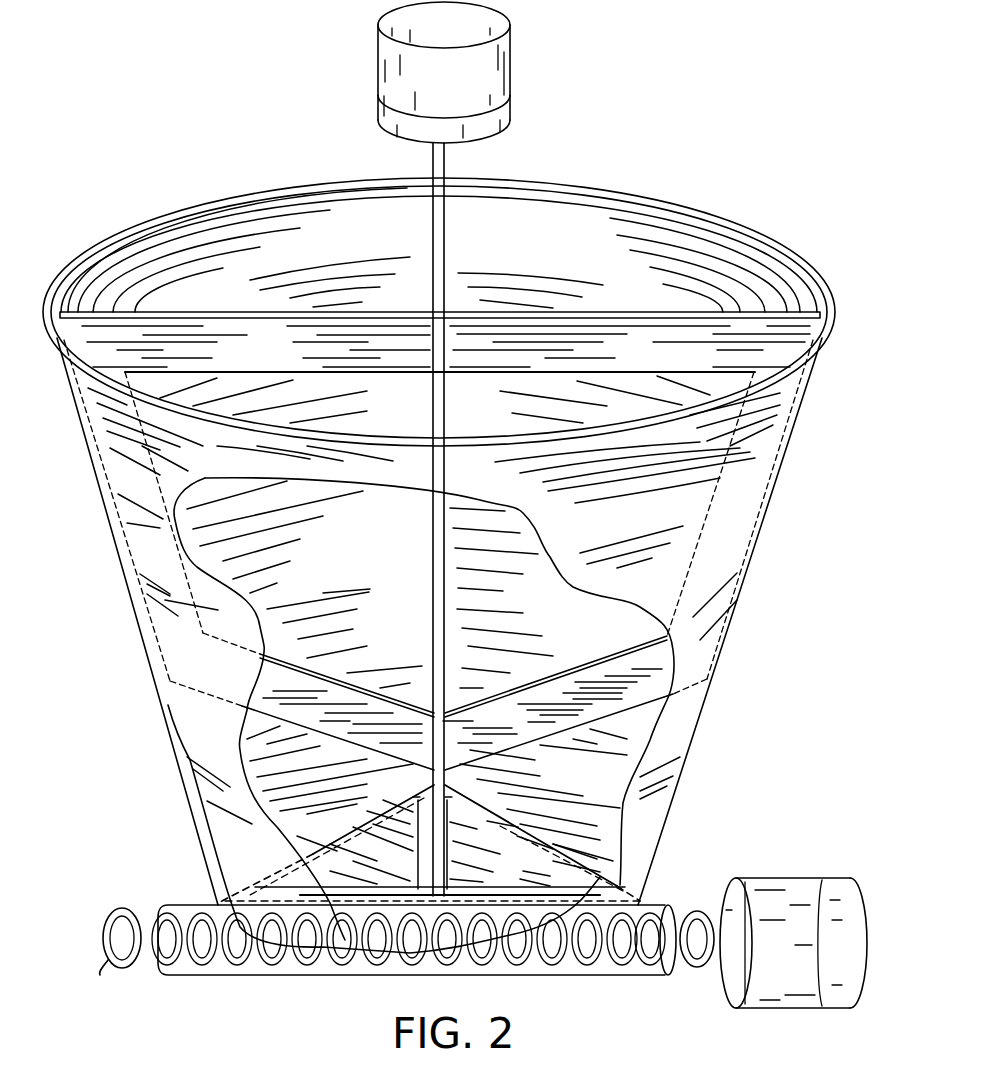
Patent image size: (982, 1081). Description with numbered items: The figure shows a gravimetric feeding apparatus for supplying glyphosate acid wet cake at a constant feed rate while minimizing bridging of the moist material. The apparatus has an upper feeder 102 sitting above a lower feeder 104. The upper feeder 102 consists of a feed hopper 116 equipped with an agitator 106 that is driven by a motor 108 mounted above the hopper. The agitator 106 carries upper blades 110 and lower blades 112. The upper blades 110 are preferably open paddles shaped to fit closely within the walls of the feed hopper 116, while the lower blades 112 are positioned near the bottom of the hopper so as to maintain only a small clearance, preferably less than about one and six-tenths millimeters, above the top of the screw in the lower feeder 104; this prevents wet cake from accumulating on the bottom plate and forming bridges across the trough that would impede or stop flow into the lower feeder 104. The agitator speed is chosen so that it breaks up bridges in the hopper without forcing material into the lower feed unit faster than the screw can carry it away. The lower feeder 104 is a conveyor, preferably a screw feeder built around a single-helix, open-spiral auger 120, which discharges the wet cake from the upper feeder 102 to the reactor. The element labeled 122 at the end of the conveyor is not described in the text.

The upper feeder 102 is at (765, 567).
The lower feeder 104 is at (167, 848).
The agitator 106 is at (442, 280).
The motor 108 is at (515, 70).
The upper blades 110 is at (731, 314).
The lower blades 112 is at (600, 877).
The feed hopper 116 is at (703, 734).
The auger 120 is at (115, 906).
The coupling cylinder 122 is at (772, 879).